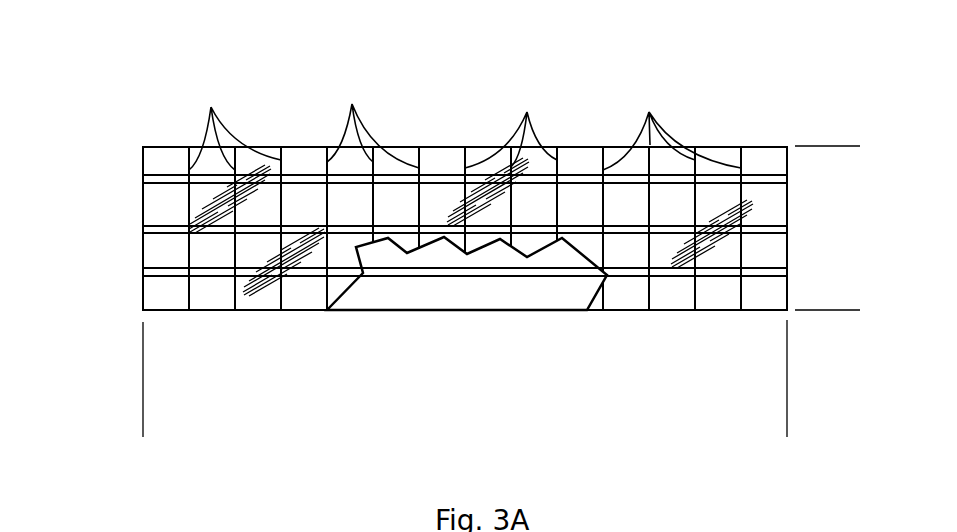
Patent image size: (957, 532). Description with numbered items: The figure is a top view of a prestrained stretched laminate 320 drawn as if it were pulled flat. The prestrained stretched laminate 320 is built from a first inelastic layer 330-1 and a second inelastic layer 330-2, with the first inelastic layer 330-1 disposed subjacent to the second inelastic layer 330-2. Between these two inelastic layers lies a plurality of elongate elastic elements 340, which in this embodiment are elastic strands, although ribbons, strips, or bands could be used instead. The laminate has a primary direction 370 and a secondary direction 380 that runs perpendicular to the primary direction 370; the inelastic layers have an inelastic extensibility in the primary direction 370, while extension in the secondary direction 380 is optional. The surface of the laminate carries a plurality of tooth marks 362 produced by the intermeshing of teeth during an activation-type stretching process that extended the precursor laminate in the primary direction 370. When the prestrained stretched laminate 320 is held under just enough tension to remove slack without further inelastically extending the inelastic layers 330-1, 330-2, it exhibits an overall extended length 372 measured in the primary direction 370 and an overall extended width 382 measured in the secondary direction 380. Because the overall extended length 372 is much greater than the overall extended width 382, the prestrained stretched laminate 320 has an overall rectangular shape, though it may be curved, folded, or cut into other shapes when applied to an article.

The prestrained stretched laminate 320 is at (137, 103).
The elongate elastic element 340 is at (136, 177).
The tooth mark 362 is at (465, 121).
The first inelastic layer 330-1 is at (495, 312).
The second inelastic layer 330-2 is at (641, 312).
The primary direction 370 is at (367, 450).
The overall extended length 372 is at (787, 421).
The secondary direction 380 is at (826, 332).
The overall extended width 382 is at (852, 146).